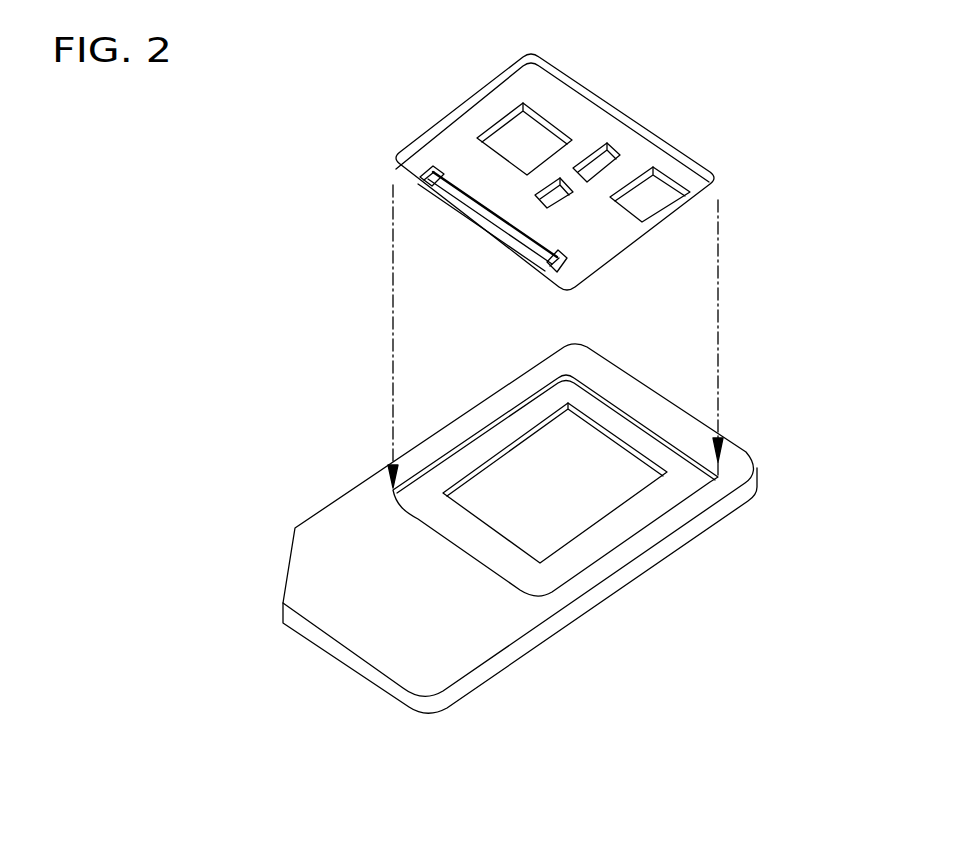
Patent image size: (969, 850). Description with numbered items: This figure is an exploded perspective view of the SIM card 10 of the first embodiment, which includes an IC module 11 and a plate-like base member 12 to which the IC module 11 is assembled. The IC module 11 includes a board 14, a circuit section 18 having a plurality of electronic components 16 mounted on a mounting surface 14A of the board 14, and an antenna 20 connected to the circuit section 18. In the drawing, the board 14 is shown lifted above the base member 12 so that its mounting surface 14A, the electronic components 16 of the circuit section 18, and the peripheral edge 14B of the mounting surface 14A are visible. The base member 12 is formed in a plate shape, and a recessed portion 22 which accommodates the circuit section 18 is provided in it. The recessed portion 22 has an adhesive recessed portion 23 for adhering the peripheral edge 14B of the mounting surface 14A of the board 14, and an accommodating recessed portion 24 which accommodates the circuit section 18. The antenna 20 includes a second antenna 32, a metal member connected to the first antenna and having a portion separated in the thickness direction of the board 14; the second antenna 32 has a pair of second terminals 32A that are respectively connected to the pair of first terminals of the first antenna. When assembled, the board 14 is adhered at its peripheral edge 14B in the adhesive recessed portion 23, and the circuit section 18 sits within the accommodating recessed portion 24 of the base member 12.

The SIM card 10 is at (290, 146).
The IC module 11 is at (393, 167).
The base member 12 is at (341, 497).
The board 14 is at (633, 110).
The mounting surface 14A is at (697, 199).
The peripheral edge 14B is at (495, 117).
The electronic components 16 is at (543, 147).
The circuit section 18 is at (663, 155).
The antenna 20 is at (508, 248).
The recessed portion 22 is at (760, 305).
The adhesive recessed portion 23 is at (605, 402).
The accommodating recessed portion 24 is at (617, 463).
The second antenna 32 is at (493, 223).
The second terminals 32A is at (422, 178).